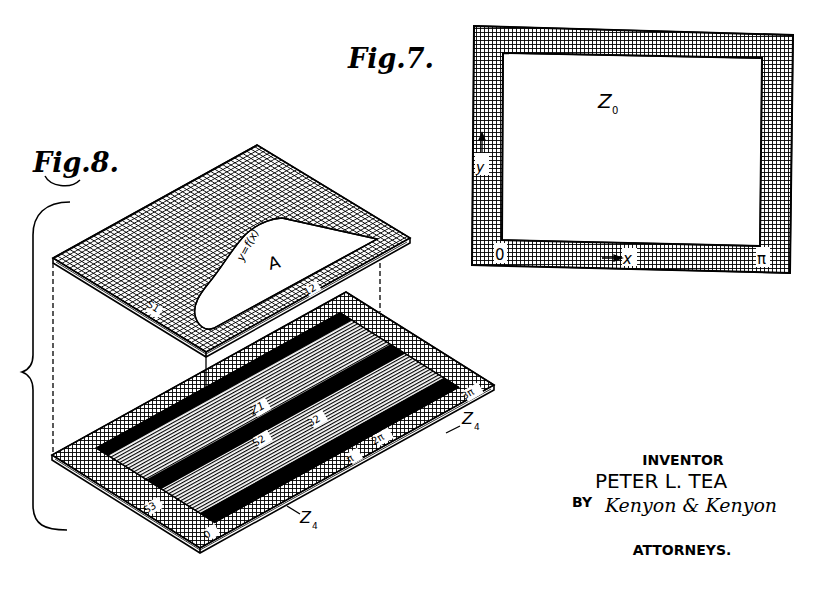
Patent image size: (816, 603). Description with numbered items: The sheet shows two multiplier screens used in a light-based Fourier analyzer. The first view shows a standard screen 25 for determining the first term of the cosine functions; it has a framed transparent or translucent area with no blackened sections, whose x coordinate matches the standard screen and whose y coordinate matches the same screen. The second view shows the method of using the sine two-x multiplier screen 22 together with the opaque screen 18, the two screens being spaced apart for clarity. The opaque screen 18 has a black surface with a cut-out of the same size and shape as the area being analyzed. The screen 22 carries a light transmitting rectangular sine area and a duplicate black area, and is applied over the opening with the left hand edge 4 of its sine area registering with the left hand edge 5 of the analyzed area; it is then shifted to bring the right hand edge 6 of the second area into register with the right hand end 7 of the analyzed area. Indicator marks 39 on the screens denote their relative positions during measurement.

In FIG. 7, the screen 25 is at (683, 36).
In FIG. 8, the opaque screen 18 is at (283, 166).
In FIG. 8, the right hand end 7 is at (377, 238).
In FIG. 8, the left hand edge 5 is at (187, 347).
In FIG. 8, the indicator marks 39 is at (200, 370).
In FIG. 8, the right hand edge 6 is at (472, 373).
In FIG. 8, the sine 2x multiplier screen 22 is at (349, 467).
In FIG. 8, the left hand edge 4 is at (178, 532).